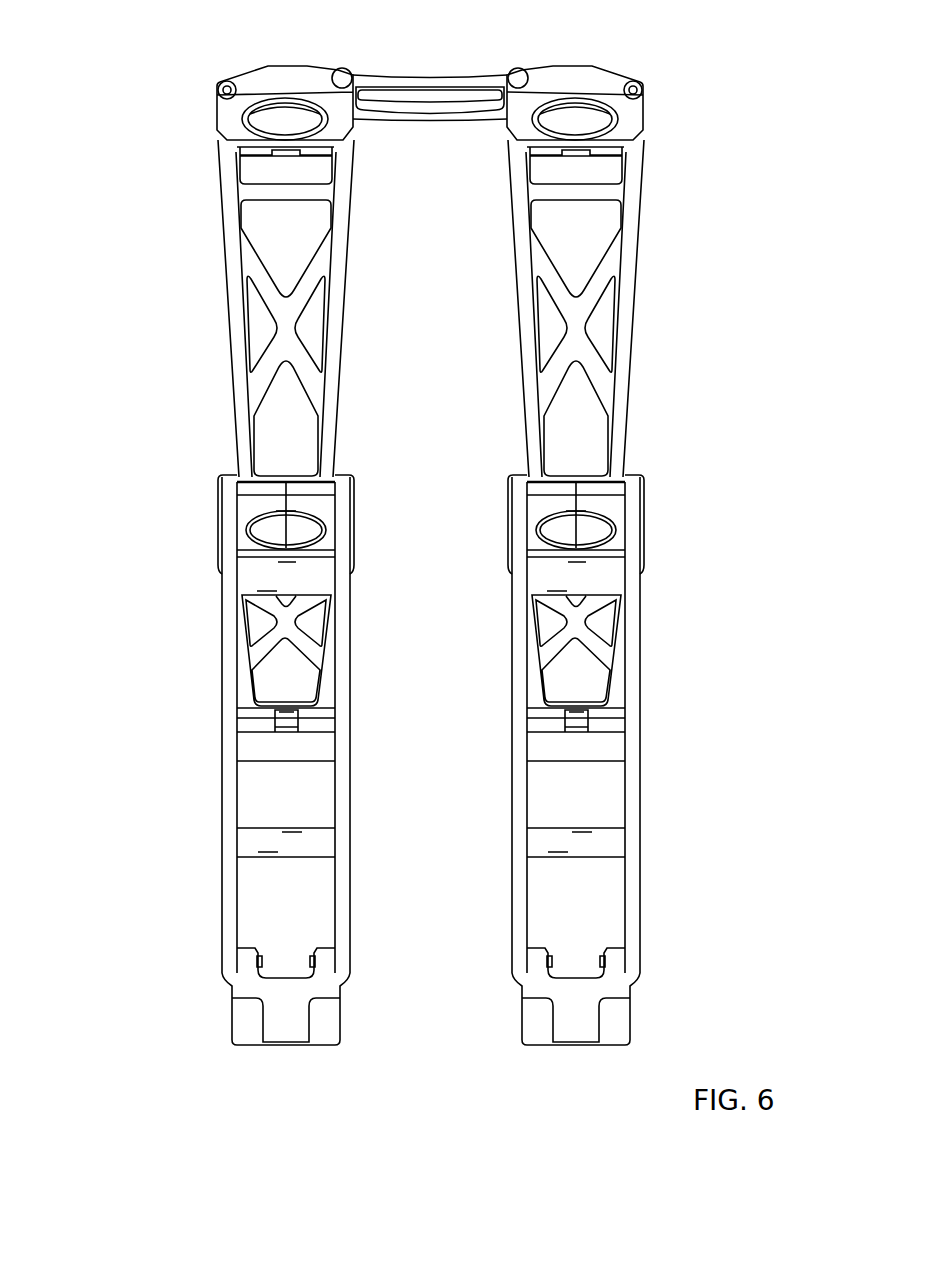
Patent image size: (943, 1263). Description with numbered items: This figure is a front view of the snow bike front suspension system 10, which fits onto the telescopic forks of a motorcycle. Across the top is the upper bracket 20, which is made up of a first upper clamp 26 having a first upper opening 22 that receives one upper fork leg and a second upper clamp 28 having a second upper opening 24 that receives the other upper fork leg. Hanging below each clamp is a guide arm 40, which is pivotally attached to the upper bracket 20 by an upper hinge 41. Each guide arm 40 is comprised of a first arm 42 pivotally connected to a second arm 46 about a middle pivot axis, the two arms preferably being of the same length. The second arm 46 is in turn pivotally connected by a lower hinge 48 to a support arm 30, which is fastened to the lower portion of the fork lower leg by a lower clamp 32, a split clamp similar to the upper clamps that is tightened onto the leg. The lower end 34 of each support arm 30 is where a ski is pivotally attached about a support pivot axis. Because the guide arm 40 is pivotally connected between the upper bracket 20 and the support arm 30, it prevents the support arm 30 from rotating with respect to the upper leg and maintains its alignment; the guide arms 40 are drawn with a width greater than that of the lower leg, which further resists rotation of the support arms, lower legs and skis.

The snow bike front suspension system 10 is at (130, 133).
The upper bracket 20 is at (412, 76).
The first upper opening 22 is at (272, 123).
The second upper opening 24 is at (601, 121).
The first upper clamp 26 is at (271, 66).
The second upper clamp 28 is at (590, 66).
The support arm 30 is at (352, 797).
The lower clamp 32 is at (310, 532).
The lower end 34 is at (285, 1045).
The guide arm 40 is at (348, 328).
The upper hinge 41 is at (317, 157).
The first arm 42 is at (338, 398).
The second arm 46 is at (282, 666).
The lower hinge 48 is at (315, 720).